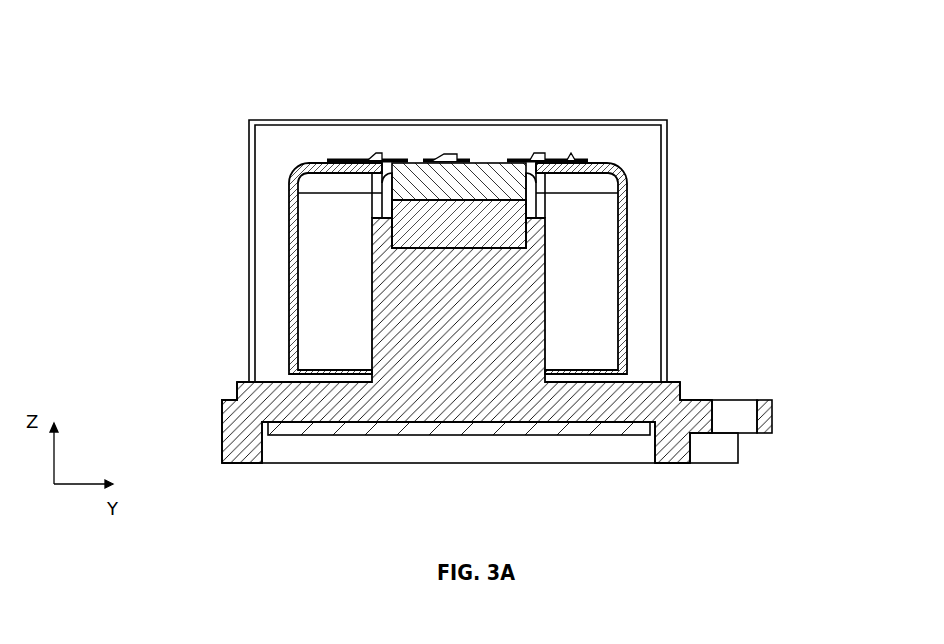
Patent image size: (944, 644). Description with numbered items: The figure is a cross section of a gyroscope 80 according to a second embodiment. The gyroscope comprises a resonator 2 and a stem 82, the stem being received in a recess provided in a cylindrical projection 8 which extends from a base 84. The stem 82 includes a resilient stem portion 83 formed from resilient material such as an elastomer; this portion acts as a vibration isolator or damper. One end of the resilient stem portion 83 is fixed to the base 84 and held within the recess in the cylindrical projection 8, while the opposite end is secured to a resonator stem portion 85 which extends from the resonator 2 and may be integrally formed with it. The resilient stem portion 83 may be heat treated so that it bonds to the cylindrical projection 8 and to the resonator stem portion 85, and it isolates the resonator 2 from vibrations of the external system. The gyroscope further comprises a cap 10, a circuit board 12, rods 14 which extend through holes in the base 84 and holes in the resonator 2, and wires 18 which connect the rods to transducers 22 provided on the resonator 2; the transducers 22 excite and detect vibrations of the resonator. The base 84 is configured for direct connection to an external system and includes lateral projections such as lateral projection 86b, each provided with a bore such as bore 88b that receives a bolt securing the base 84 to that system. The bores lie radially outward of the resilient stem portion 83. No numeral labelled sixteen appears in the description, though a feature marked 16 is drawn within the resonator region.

The resonator 2 is at (295, 293).
The cylindrical projection 8 is at (488, 335).
The cap 10 is at (600, 122).
The circuit board 12 is at (488, 428).
The rods 14 is at (377, 210).
The coil 16 is at (333, 193).
The wires 18 is at (364, 157).
The transducers 22 is at (338, 158).
The gyroscope 80 is at (181, 58).
The stem 82 is at (470, 223).
The resilient stem portion 83 is at (545, 238).
The base 84 is at (224, 440).
The resonator stem portion 85 is at (421, 188).
The lateral projection 86b is at (773, 410).
The bore 88b is at (736, 408).